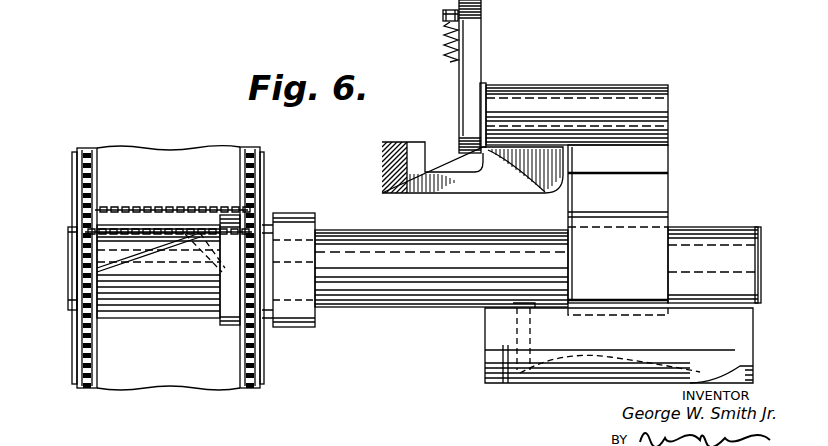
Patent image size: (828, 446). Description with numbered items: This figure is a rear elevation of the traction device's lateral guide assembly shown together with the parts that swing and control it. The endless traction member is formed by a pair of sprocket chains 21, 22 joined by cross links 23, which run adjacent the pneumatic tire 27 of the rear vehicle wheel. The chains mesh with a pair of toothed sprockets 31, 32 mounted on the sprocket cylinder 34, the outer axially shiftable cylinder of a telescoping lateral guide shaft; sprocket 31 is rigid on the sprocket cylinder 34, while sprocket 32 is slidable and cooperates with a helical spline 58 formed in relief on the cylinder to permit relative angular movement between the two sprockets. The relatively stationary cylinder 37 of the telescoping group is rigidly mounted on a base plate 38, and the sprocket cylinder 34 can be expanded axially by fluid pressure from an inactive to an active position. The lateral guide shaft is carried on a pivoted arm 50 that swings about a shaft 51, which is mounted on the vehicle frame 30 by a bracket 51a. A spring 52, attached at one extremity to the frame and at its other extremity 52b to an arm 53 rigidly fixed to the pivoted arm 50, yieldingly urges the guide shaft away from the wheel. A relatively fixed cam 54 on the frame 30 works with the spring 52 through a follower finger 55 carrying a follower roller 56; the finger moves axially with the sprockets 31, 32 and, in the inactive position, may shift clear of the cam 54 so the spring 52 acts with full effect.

The sprocket chain 21 is at (97, 180).
The sprocket chain 22 is at (262, 177).
The cross links 23 is at (205, 231).
The pneumatic tire 27 is at (180, 373).
The frame 30 is at (383, 158).
The sprocket 31 is at (78, 354).
The sprocket 32 is at (265, 352).
The sprocket cylinder 34 is at (166, 306).
The stationary cylinder 37 is at (722, 228).
The base plate 38 is at (762, 238).
The pivoted arm 50 is at (668, 173).
The shaft 51 is at (622, 99).
The bracket 51a is at (520, 178).
The spring 52 is at (446, 46).
The spring extremity 52b is at (442, 17).
The arm 53 is at (481, 48).
The cam 54 is at (594, 388).
The follower finger 55 is at (517, 337).
The follower roller 56 is at (524, 388).
The helical spline 58 is at (198, 228).